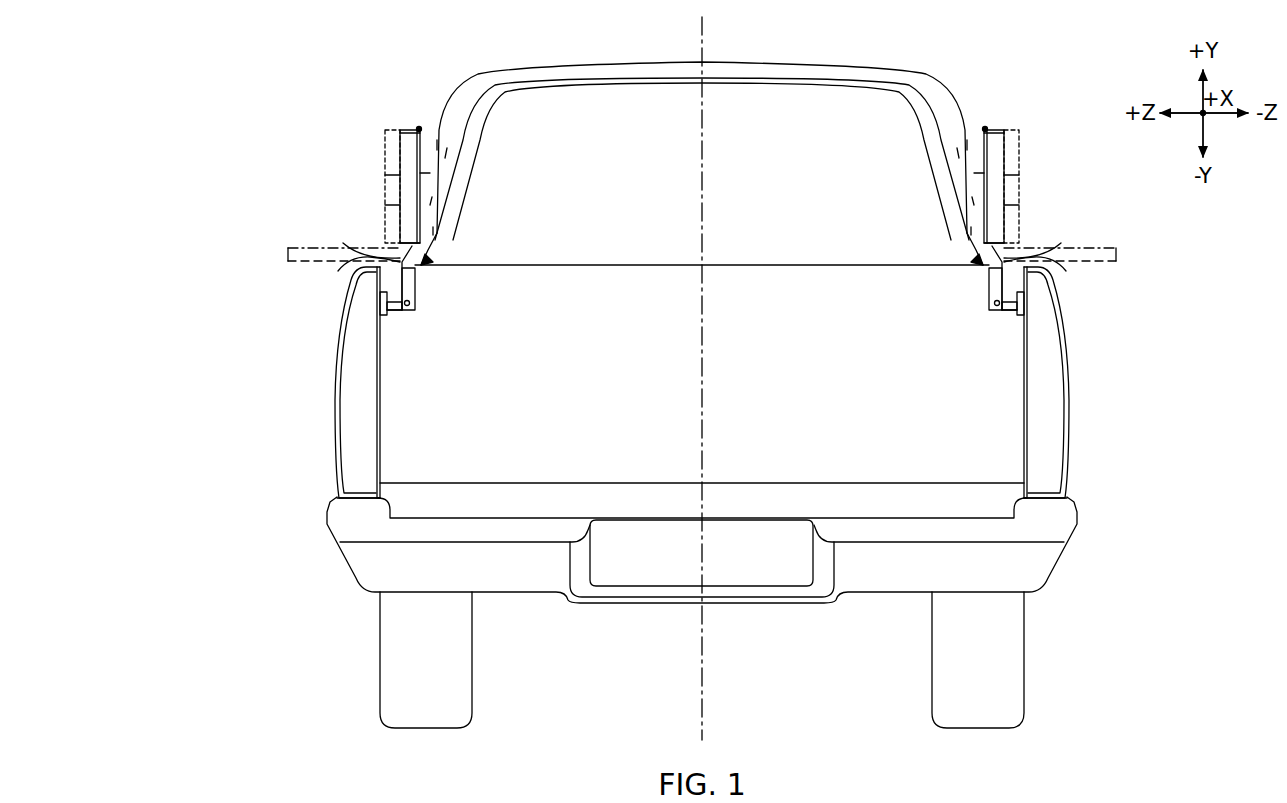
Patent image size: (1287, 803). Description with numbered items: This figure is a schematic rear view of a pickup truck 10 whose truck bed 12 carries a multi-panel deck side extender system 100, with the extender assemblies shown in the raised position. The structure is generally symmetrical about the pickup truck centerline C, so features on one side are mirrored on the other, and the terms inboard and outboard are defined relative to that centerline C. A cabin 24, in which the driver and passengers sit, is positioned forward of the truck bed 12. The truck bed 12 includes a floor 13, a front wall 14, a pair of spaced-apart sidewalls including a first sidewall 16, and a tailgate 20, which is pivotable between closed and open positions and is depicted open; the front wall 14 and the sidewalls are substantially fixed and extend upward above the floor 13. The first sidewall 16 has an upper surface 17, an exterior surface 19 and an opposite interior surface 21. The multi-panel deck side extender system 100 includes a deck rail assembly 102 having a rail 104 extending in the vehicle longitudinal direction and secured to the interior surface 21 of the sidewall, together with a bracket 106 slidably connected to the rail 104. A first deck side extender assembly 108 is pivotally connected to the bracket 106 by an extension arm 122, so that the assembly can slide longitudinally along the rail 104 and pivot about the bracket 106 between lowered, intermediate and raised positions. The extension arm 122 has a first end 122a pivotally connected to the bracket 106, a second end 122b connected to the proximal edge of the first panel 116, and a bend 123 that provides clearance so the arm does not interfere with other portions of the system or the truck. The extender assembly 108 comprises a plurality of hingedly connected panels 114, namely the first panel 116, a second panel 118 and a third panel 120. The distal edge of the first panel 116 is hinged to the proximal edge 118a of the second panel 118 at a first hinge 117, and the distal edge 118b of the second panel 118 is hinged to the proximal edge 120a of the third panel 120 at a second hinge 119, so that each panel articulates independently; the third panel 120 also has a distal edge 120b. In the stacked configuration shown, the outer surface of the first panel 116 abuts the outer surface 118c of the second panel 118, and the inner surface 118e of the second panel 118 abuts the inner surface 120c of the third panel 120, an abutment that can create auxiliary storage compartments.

The pickup truck 10 is at (987, 62).
The truck bed 12 is at (630, 114).
The floor 13 is at (613, 483).
The front wall 14 is at (828, 342).
The first sidewall 16 is at (380, 420).
The upper surface 17 is at (338, 271).
The exterior surface 19 is at (336, 398).
The tailgate 20 is at (982, 508).
The interior surface 21 is at (380, 372).
The cabin 24 is at (788, 40).
The multi-panel deck side extender system 100 is at (143, 100).
The deck rail assembly 102 is at (272, 176).
The rail 104 is at (380, 303).
The bracket 106 is at (392, 313).
The first deck side extender assembly 108 is at (306, 140).
The plurality of hingedly connected panels 114 is at (388, 112).
The first panel 116 is at (415, 128).
The first hinge 117 is at (416, 128).
The second panel 118 is at (400, 162).
The proximal edge 118a is at (406, 136).
The distal edge 118b is at (425, 214).
The outer surface 118c is at (422, 176).
The inner surface 118e is at (400, 207).
The second hinge 119 is at (400, 242).
The third panel 120 is at (288, 248).
The proximal edge 120a is at (345, 243).
The distal edge 120b is at (288, 261).
The inner surface 120c is at (398, 186).
The extension arm 122 is at (417, 292).
The first end 122a is at (408, 314).
The second end 122b is at (416, 268).
The bend 123 is at (428, 255).
The pickup truck centerline C is at (704, 35).